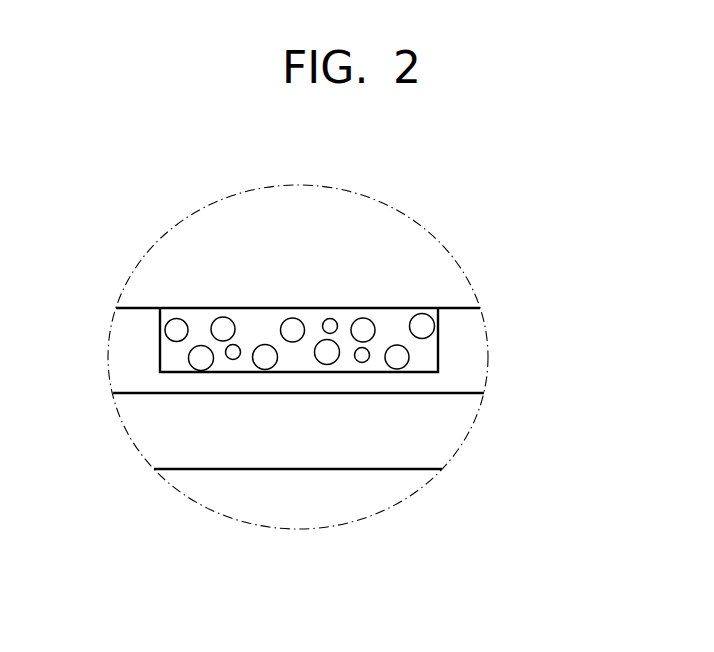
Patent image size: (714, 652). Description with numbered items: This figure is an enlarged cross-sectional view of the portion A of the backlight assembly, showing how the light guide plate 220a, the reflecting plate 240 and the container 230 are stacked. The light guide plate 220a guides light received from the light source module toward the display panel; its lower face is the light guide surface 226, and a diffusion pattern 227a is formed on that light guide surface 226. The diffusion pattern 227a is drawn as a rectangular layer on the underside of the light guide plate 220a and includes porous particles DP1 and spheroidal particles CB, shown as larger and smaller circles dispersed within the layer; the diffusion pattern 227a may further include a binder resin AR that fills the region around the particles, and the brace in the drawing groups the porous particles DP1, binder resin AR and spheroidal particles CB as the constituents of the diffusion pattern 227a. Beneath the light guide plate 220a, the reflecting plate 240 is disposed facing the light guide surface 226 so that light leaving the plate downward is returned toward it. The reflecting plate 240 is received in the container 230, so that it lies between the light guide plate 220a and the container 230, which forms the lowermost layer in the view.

The portion A is at (131, 276).
The light guide plate 220a is at (407, 248).
The light guide surface 226 is at (417, 307).
The diffusion pattern 227a is at (401, 351).
The porous particles DP1 is at (435, 325).
The binder resin AR is at (426, 352).
The spheroidal particles CB is at (363, 362).
The reflecting plate 240 is at (231, 450).
The container 230 is at (307, 515).